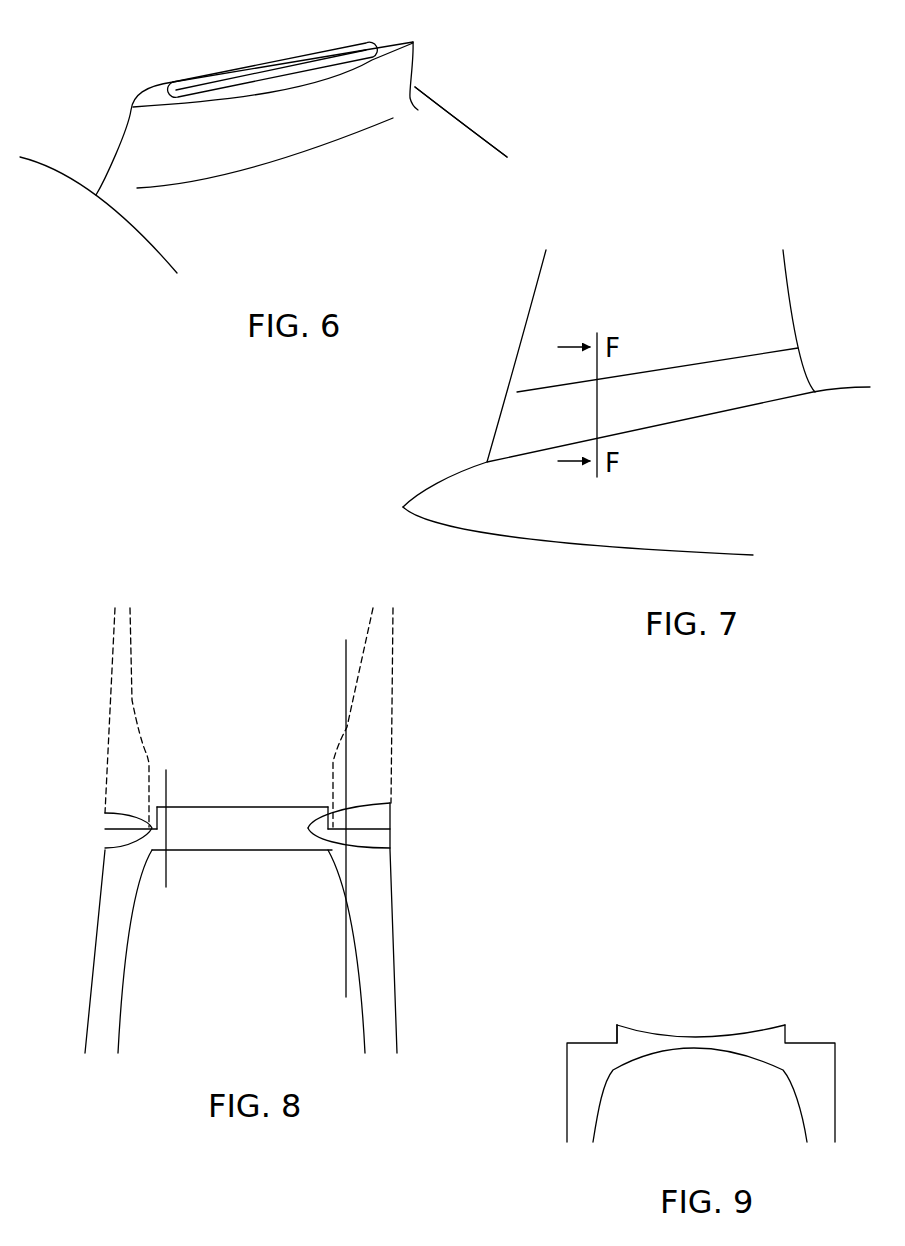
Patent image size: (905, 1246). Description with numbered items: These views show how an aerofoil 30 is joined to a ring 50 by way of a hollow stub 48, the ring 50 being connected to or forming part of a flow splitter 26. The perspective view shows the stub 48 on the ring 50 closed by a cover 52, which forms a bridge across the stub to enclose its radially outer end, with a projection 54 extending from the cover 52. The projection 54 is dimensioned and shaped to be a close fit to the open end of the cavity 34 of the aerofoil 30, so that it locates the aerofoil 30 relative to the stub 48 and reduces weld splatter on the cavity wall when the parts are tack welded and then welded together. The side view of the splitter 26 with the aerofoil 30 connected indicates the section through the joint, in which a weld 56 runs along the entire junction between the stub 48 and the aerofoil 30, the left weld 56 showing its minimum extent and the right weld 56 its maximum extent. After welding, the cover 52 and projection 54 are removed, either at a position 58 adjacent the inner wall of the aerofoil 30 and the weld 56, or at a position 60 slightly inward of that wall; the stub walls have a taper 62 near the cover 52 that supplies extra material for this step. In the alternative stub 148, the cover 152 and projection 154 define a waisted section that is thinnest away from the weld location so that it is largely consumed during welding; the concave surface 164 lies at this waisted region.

In FIG. 7, the flow splitter 26 is at (448, 477).
In FIG. 8, the aerofoil 30 is at (383, 653).
In FIG. 8, the cavity 34 is at (259, 704).
In FIG. 6, the stub 48 is at (190, 138).
In FIG. 8, the stub 48 is at (380, 990).
In FIG. 6, the ring 50 is at (450, 147).
In FIG. 6, the cover 52 is at (157, 97).
In FIG. 8, the cover 52 is at (223, 834).
In FIG. 6, the projection 54 is at (216, 73).
In FIG. 8, the projection 54 is at (228, 800).
In FIG. 8, the weld 56 is at (119, 810).
In FIG. 8, the position 58 is at (161, 765).
In FIG. 8, the position 60 is at (342, 672).
In FIG. 8, the taper 62 is at (144, 891).
In FIG. 9, the stub 148 is at (827, 975).
In FIG. 9, the cover 152 is at (635, 1058).
In FIG. 9, the projection 154 is at (620, 1025).
In FIG. 9, the concave surface 164 is at (697, 1033).